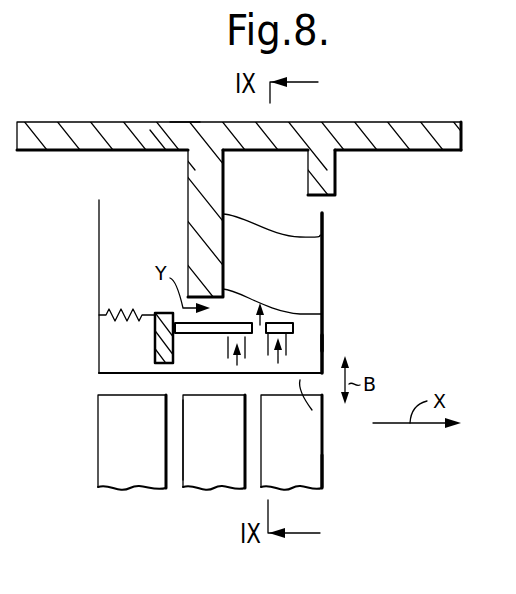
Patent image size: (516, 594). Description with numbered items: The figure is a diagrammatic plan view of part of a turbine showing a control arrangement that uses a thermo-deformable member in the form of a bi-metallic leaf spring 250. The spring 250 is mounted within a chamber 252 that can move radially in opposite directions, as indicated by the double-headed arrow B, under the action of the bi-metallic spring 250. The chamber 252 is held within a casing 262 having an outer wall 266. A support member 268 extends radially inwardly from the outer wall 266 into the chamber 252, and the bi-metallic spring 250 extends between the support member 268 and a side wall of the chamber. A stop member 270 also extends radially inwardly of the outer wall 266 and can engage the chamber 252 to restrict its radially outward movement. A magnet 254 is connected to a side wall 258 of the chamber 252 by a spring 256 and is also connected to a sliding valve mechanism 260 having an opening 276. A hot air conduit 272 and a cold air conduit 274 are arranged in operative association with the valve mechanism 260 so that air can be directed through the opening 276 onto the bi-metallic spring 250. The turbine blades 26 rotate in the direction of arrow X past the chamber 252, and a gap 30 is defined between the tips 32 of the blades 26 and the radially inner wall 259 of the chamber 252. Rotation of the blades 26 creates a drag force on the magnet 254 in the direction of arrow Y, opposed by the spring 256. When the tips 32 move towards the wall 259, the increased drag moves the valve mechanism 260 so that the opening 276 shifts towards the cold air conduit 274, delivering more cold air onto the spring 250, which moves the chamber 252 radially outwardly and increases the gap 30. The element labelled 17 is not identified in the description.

The casing 262 is at (183, 113).
The outer wall 266 is at (415, 122).
The support member 268 is at (188, 186).
The stop member 270 is at (335, 170).
The side wall 258 is at (99, 245).
The spring 256 is at (115, 312).
The magnet 254 is at (155, 342).
The gap 30 is at (110, 383).
The bi-metallic leaf spring 250 is at (312, 272).
The chamber 252 is at (334, 343).
The sliding valve mechanism 260 is at (187, 345).
The hot air conduit 272 is at (226, 347).
The opening 276 is at (259, 335).
The cold air conduit 274 is at (287, 345).
The radially inner wall 259 is at (322, 423).
The turbine blades 26 is at (331, 481).
The carriage 17 is at (331, 521).
The tips 32 is at (197, 391).